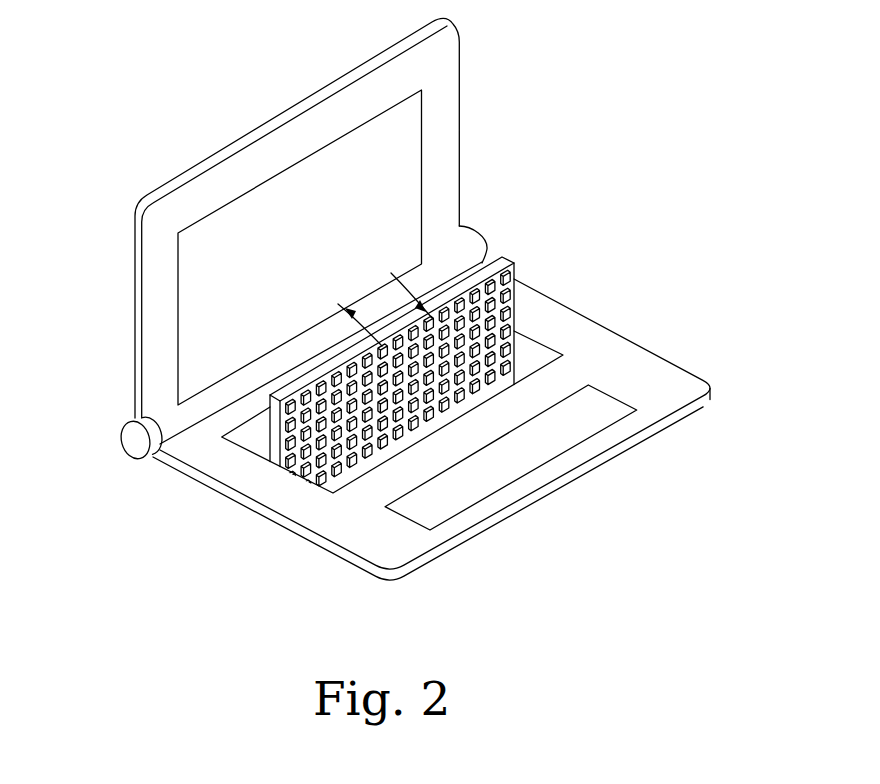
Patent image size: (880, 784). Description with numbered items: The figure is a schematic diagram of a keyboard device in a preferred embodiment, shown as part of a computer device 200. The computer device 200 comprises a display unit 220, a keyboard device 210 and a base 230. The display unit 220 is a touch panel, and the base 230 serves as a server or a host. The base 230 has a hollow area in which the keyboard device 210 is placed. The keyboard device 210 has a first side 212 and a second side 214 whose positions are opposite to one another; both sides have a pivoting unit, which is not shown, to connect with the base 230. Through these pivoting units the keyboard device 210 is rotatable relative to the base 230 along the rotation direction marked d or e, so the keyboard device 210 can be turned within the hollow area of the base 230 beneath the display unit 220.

The computer device 200 is at (105, 124).
The keyboard device 210 is at (338, 352).
The first side 212 is at (275, 429).
The second side 214 is at (515, 327).
The display unit 220 is at (462, 168).
The base 230 is at (668, 362).